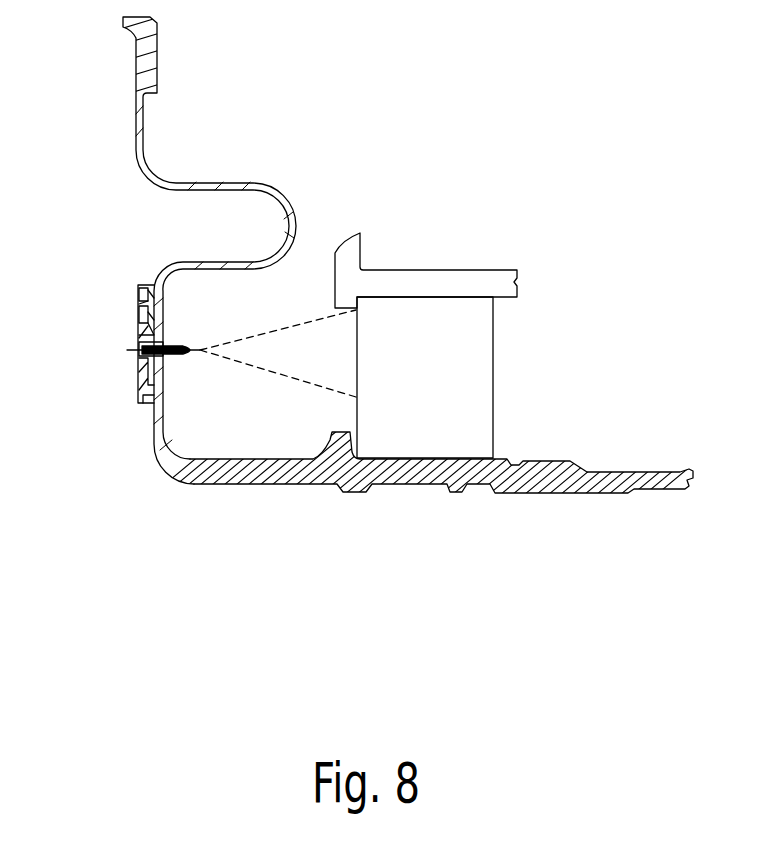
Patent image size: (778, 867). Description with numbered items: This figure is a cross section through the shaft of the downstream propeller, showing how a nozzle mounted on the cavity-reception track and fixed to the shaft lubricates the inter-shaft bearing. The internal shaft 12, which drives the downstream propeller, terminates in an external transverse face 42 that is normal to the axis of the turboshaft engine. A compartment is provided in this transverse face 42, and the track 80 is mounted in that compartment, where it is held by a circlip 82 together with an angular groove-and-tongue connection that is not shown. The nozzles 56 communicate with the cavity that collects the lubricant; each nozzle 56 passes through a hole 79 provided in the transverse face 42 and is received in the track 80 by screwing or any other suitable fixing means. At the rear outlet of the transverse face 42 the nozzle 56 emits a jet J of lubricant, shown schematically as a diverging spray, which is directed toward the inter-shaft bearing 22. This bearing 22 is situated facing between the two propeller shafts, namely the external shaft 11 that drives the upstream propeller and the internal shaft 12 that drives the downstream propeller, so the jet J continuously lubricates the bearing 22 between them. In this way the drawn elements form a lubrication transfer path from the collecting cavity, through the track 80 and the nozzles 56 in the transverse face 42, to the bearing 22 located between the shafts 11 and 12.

The external shaft 11 is at (485, 278).
The internal shaft 12 is at (515, 480).
The inter-shaft bearing 22 is at (493, 378).
The external transverse face 42 is at (153, 430).
The nozzle 56 is at (138, 355).
The hole 79 is at (162, 381).
The track 80 is at (138, 323).
The circlip 82 is at (138, 295).
The jet J is at (278, 353).